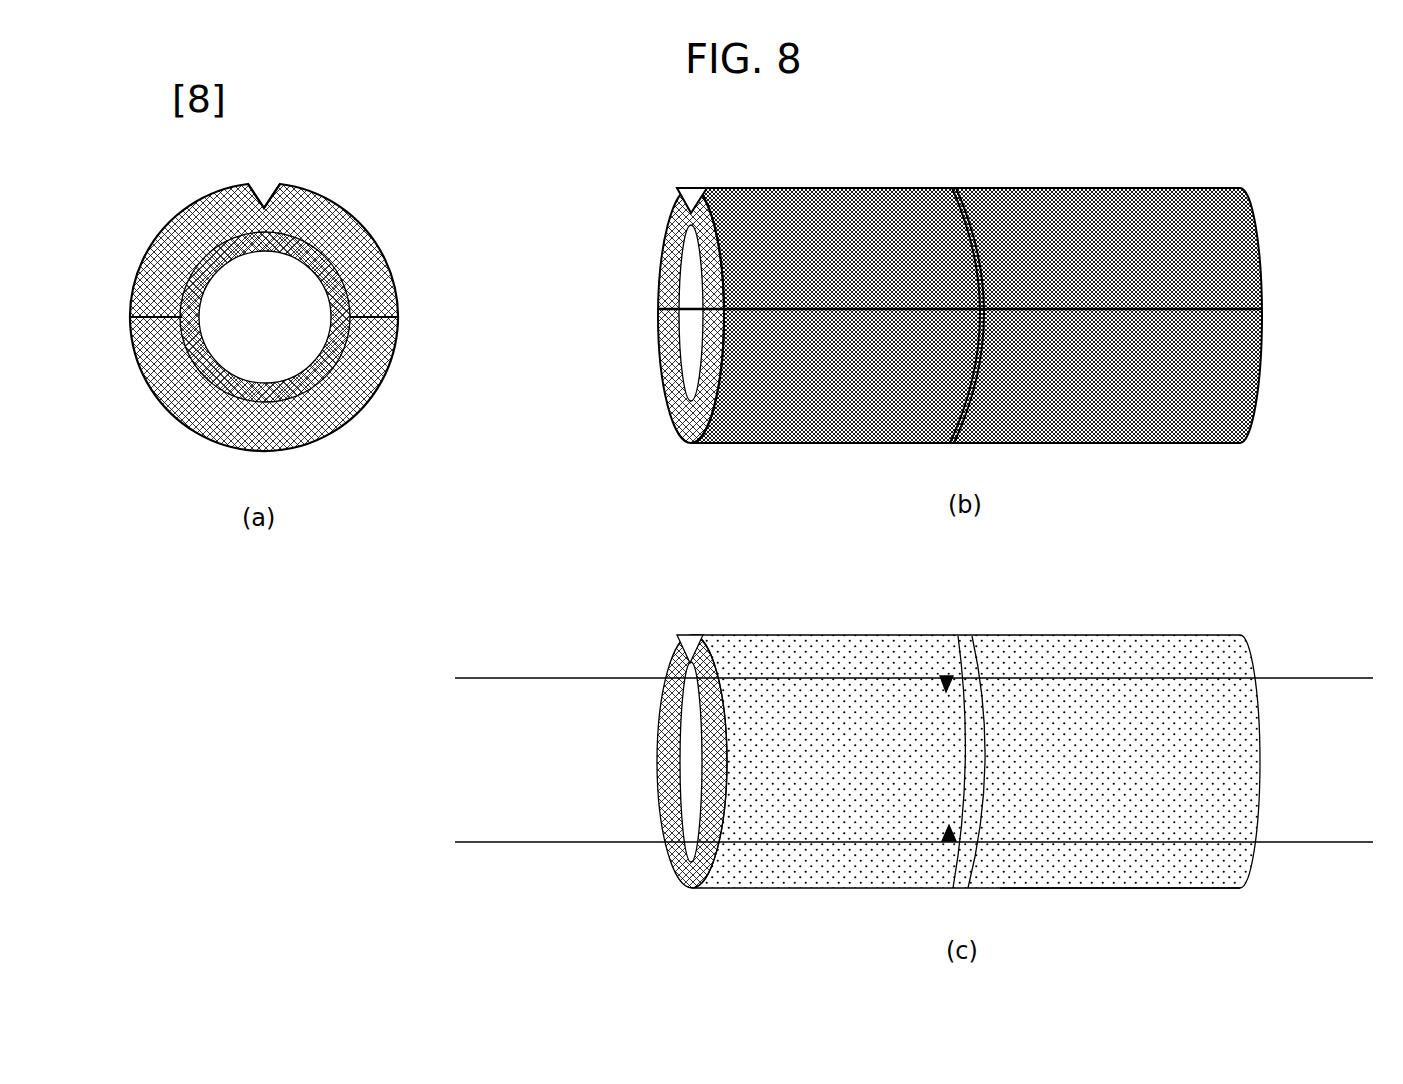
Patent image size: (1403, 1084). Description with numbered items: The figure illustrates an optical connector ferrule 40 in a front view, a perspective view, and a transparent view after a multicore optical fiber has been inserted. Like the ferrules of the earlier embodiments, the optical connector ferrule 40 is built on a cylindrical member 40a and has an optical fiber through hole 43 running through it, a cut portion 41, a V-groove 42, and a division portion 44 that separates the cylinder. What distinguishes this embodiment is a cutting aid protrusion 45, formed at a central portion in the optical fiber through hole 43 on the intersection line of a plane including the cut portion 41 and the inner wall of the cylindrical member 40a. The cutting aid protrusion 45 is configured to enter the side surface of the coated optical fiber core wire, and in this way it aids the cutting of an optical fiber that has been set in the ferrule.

The optical connector ferrule 40 is at (332, 172).
The cylindrical member 40a is at (1127, 443).
The cut portion 41 is at (977, 218).
The V-groove 42 is at (259, 184).
The optical fiber through hole 43 is at (267, 377).
The division portion 44 is at (1097, 310).
The cutting aid protrusion 45 is at (293, 250).